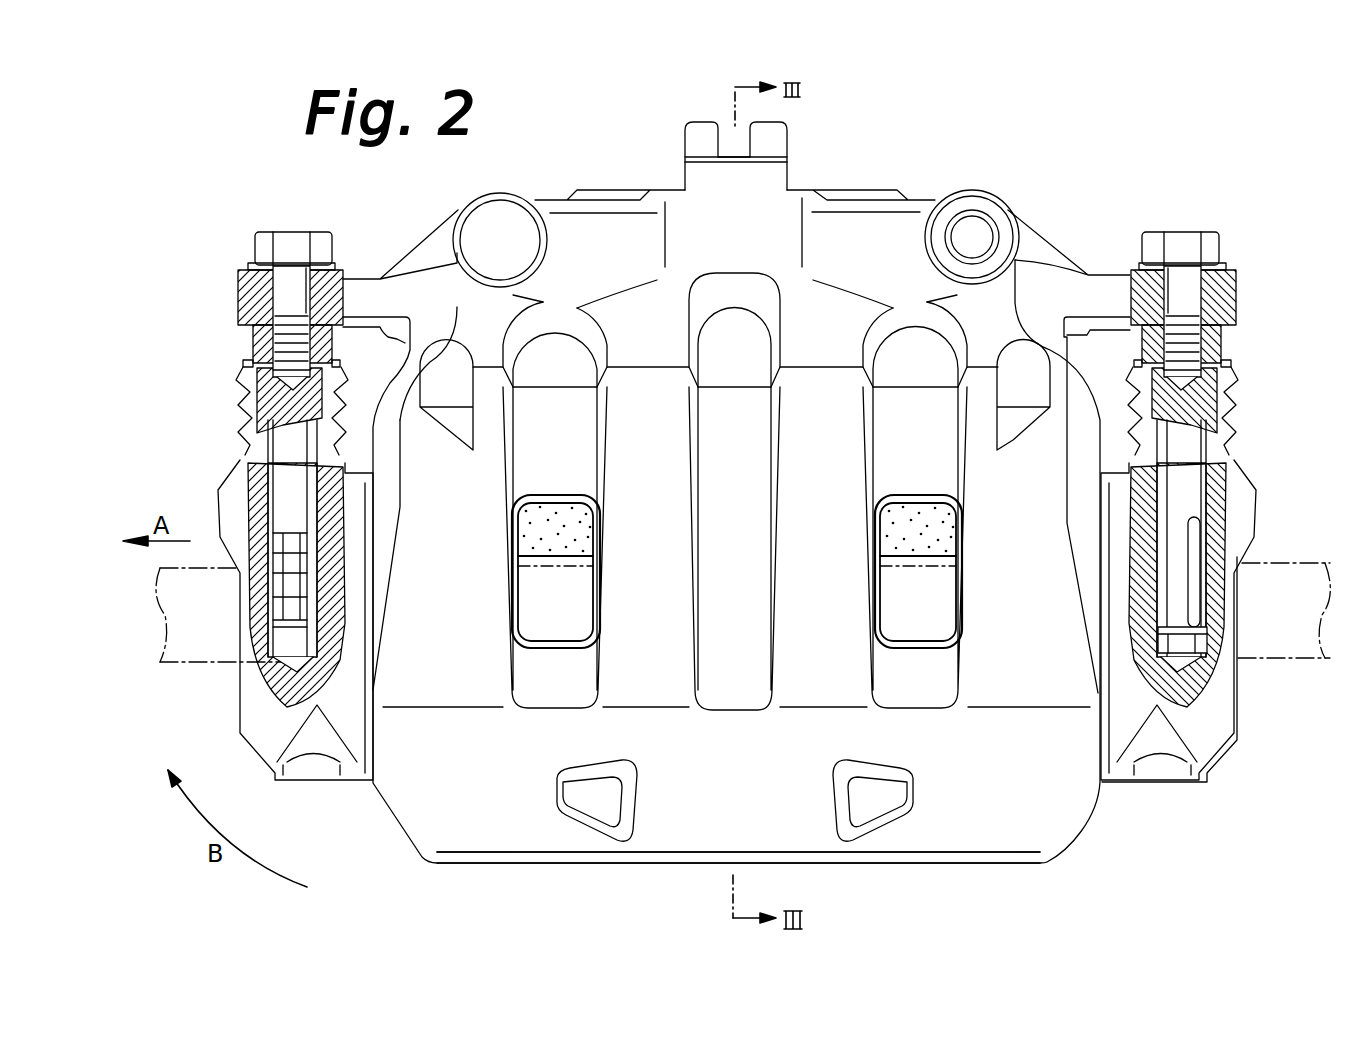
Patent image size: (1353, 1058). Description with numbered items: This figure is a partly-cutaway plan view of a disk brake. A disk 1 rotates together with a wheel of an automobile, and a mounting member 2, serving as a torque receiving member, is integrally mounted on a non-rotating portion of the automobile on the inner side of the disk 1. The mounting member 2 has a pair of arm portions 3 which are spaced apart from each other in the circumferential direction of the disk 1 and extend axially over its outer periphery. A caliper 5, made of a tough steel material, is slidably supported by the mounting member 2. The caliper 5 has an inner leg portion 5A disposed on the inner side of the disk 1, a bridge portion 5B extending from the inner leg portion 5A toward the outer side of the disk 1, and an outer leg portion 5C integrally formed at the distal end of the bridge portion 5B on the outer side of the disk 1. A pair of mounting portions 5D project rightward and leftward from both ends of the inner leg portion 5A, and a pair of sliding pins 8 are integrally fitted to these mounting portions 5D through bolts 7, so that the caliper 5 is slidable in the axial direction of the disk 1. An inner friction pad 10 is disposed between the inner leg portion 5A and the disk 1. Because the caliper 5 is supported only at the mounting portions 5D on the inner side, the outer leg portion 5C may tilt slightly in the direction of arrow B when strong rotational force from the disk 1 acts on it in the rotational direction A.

The disk 1 is at (1258, 560).
The mounting member 2 is at (1217, 727).
The arm portions 3 is at (267, 714).
The caliper 5 is at (597, 232).
The inner leg portion 5A is at (870, 243).
The bridge portion 5B is at (478, 560).
The outer leg portion 5C is at (542, 813).
The mounting portions 5D is at (250, 297).
The bolts 7 is at (290, 247).
The sliding pins 8 is at (293, 500).
The friction pad 10 is at (937, 543).